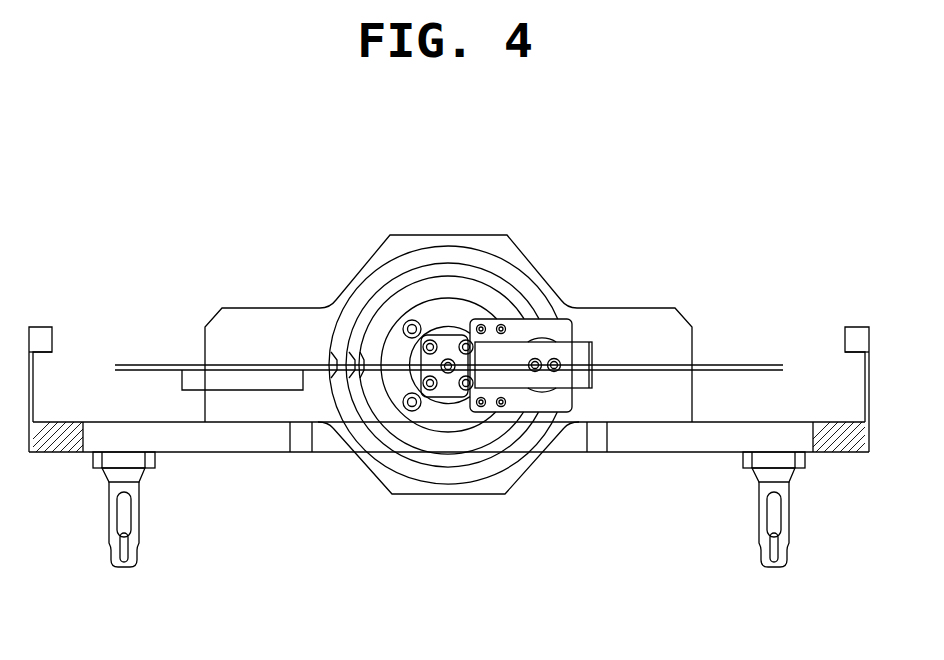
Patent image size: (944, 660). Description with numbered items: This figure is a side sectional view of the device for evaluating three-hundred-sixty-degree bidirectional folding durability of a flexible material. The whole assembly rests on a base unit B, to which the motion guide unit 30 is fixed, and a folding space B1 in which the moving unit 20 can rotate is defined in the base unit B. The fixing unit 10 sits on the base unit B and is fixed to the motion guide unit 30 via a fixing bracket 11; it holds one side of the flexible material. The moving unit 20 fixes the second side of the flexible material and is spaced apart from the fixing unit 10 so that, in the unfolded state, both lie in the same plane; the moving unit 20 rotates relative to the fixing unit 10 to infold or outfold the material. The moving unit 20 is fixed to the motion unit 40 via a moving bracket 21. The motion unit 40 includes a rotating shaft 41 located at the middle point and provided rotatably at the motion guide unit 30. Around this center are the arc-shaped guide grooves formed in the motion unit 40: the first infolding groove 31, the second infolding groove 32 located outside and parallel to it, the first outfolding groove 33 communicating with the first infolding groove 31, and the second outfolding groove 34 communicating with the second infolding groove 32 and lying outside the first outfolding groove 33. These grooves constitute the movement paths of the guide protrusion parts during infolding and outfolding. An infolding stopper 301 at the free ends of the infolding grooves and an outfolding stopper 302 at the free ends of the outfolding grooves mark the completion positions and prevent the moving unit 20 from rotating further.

The base unit B is at (53, 453).
The folding space B1 is at (205, 437).
The fixing unit 10 is at (148, 364).
The fixing bracket 11 is at (262, 383).
The moving unit 20 is at (750, 364).
The moving bracket 21 is at (565, 382).
The motion guide unit 30 is at (627, 308).
The infolding stopper 301 is at (368, 362).
The outfolding stopper 302 is at (362, 382).
The first infolding groove 31 is at (409, 300).
The second infolding groove 32 is at (446, 259).
The first outfolding groove 33 is at (453, 442).
The second outfolding groove 34 is at (492, 462).
The motion unit 40 is at (518, 331).
The rotating shaft 41 is at (445, 402).